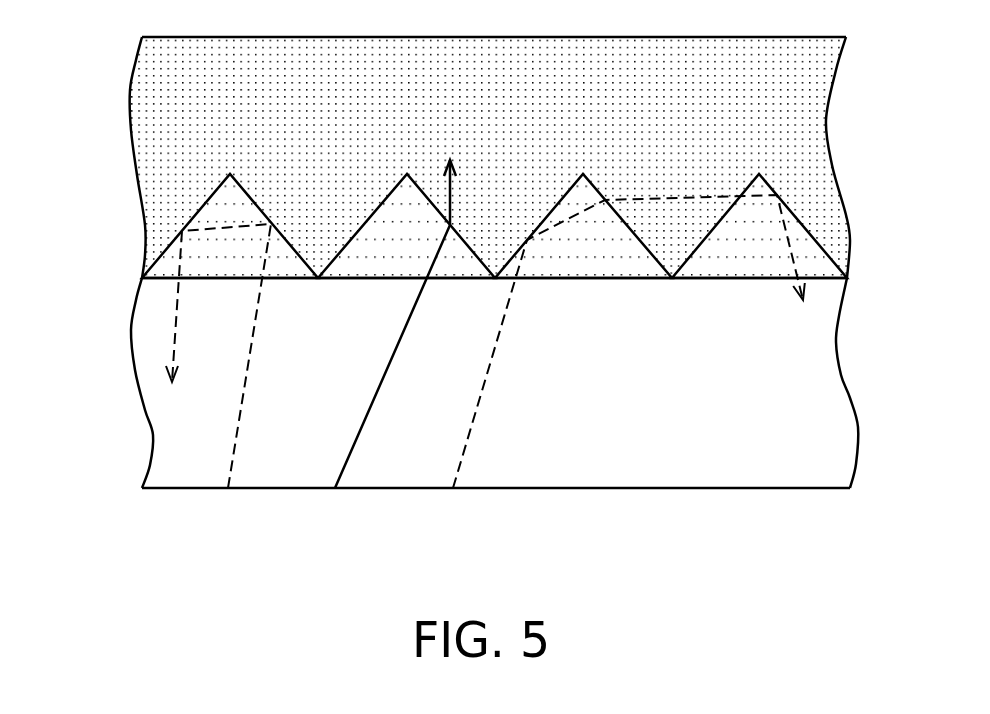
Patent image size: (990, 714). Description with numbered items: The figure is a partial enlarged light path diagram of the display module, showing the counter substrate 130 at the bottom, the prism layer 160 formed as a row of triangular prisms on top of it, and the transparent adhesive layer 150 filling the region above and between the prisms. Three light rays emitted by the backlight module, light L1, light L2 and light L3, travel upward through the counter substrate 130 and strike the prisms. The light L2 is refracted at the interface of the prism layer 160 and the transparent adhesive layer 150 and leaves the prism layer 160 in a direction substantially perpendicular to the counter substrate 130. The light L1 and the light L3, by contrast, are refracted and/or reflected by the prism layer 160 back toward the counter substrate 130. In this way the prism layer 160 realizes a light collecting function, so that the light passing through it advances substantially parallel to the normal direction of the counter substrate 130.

The transparent adhesive layer 150 is at (802, 133).
The prism layer 160 is at (807, 250).
The counter substrate 130 is at (800, 387).
The light L1 is at (240, 422).
The light L2 is at (363, 428).
The light L3 is at (470, 430).